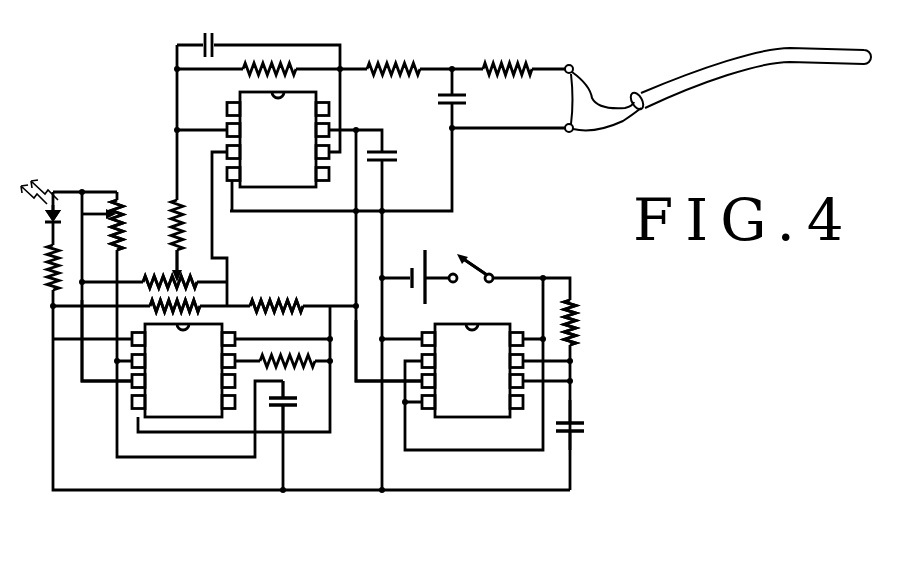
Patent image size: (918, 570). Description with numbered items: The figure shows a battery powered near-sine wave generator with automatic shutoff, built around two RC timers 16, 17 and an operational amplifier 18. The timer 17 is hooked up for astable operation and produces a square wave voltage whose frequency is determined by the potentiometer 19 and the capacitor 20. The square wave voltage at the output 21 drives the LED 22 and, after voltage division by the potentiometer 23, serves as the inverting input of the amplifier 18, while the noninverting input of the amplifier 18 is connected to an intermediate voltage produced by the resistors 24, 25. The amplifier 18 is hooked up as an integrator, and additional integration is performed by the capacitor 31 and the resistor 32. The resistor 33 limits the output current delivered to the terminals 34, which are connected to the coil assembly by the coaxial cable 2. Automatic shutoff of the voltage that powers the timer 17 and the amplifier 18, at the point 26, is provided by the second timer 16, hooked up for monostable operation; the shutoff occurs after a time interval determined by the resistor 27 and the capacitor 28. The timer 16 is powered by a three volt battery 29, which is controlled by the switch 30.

The coaxial cable 2 is at (740, 82).
The second timer 16 is at (478, 410).
The timer 17 is at (185, 395).
The operational amplifier 18 is at (277, 160).
The potentiometer 19 is at (122, 215).
The capacitor 20 is at (292, 413).
The output 21 is at (97, 385).
The LED 22 is at (62, 203).
The potentiometer 23 is at (160, 278).
The resistor 24 is at (200, 314).
The resistor 25 is at (268, 298).
The point 26 is at (365, 388).
The resistor 27 is at (578, 310).
The capacitor 28 is at (580, 412).
The battery 29 is at (418, 246).
The switch 30 is at (473, 252).
The capacitor 31 is at (470, 100).
The resistor 32 is at (384, 10).
The resistor 33 is at (492, 62).
The terminals 34 is at (572, 62).